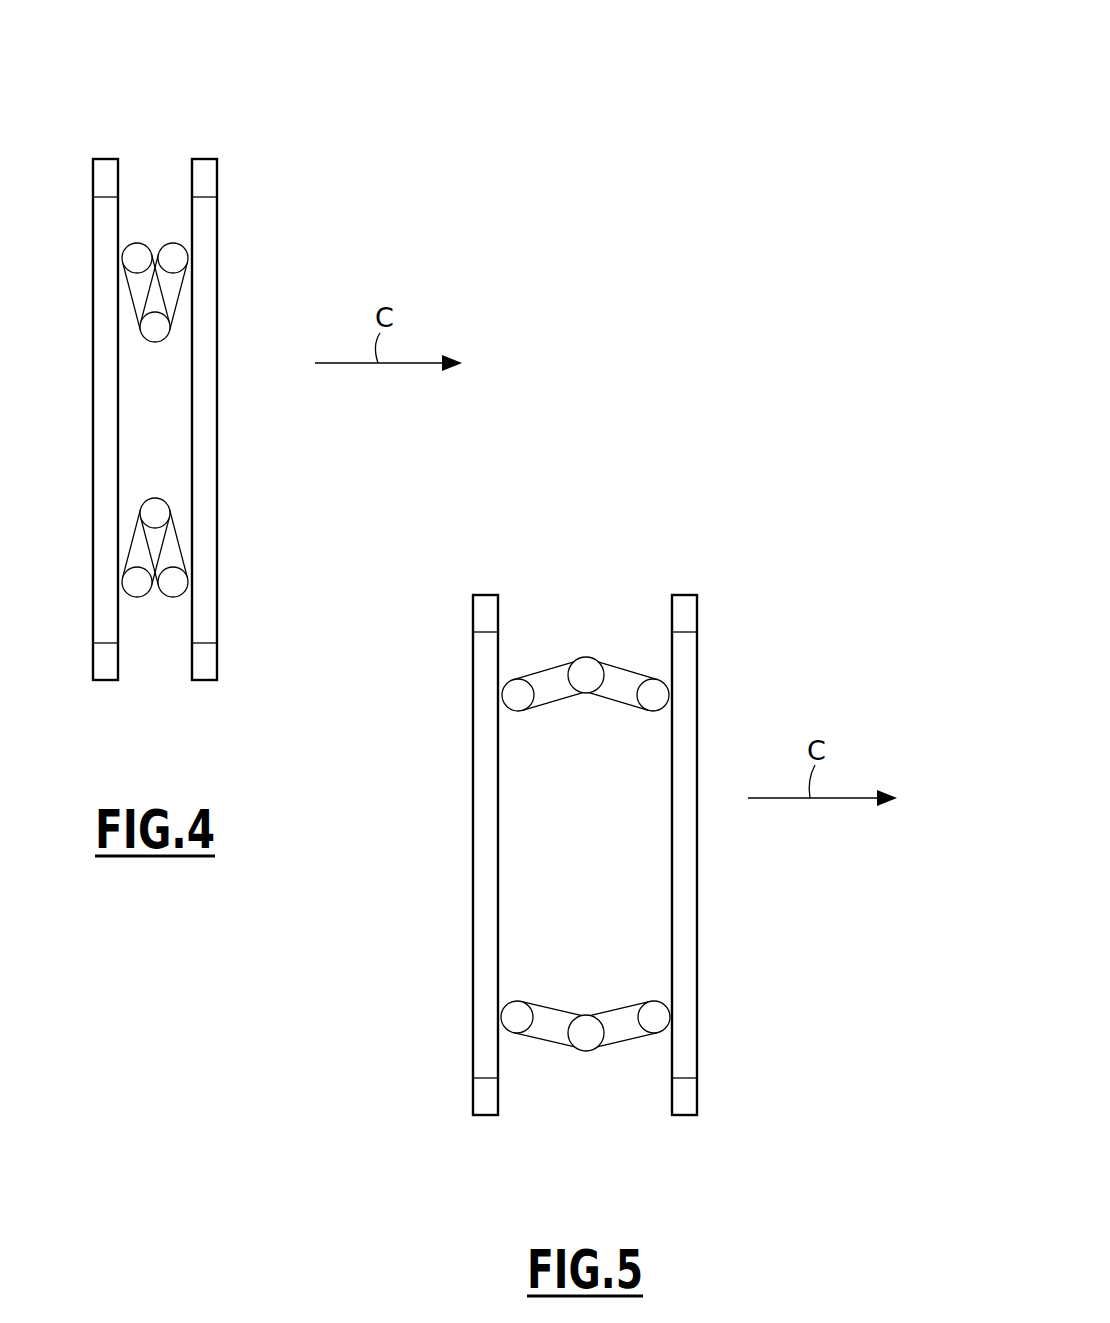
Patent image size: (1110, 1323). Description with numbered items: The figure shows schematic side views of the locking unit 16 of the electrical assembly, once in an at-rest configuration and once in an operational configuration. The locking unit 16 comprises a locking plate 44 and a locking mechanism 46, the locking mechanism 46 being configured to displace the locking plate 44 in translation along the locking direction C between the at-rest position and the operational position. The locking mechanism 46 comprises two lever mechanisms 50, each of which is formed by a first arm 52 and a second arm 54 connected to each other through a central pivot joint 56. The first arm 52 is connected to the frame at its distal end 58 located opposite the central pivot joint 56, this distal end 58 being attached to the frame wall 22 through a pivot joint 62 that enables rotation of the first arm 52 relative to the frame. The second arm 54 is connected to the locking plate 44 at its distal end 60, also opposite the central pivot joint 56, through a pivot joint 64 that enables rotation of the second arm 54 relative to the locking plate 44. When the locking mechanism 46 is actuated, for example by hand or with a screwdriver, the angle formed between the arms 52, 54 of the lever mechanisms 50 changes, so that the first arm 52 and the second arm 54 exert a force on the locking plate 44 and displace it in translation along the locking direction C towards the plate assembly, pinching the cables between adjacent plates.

In FIG. 4, the locking unit 16 is at (240, 118).
In FIG. 5, the locking unit 16 is at (652, 560).
In FIG. 4, the frame wall 22 is at (105, 415).
In FIG. 5, the frame wall 22 is at (485, 845).
In FIG. 4, the locking plate 44 is at (207, 425).
In FIG. 5, the locking plate 44 is at (680, 858).
In FIG. 4, the locking mechanism 46 is at (208, 100).
In FIG. 5, the locking mechanism 46 is at (620, 540).
In FIG. 4, the lever mechanism 50 is at (157, 424).
In FIG. 5, the lever mechanism 50 is at (587, 864).
In FIG. 4, the first arm 52 is at (137, 285).
In FIG. 5, the first arm 52 is at (548, 693).
In FIG. 4, the second arm 54 is at (172, 285).
In FIG. 5, the second arm 54 is at (615, 690).
In FIG. 4, the central pivot joint 56 is at (158, 335).
In FIG. 5, the central pivot joint 56 is at (587, 675).
In FIG. 4, the distal end of the first arm 58 is at (128, 237).
In FIG. 5, the distal end of the first arm 58 is at (510, 670).
In FIG. 4, the distal end of the second arm 60 is at (183, 235).
In FIG. 5, the distal end of the second arm 60 is at (655, 672).
In FIG. 4, the pivot joint 62 is at (133, 265).
In FIG. 5, the pivot joint 62 is at (515, 693).
In FIG. 4, the pivot joint 64 is at (175, 262).
In FIG. 5, the pivot joint 64 is at (655, 693).